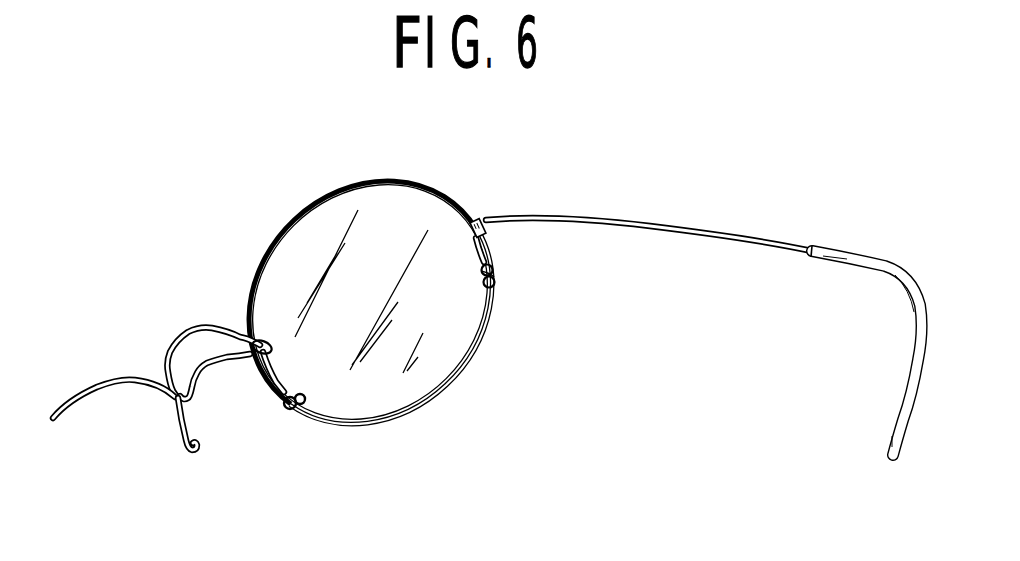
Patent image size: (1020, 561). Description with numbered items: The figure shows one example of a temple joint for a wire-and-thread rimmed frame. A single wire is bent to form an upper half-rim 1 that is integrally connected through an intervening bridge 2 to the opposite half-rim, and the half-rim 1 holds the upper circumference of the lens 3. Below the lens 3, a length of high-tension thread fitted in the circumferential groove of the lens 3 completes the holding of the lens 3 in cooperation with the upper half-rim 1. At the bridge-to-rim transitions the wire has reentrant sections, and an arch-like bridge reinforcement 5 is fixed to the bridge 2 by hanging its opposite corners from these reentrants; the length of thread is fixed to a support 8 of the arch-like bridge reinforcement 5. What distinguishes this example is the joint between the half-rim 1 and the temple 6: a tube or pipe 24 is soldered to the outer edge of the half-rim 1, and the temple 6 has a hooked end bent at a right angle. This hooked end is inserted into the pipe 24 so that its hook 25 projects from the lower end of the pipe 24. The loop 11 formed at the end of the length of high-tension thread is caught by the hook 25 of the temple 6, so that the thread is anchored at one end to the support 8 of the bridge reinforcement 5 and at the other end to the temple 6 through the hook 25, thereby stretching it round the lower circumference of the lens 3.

The upper half-rim 1 is at (312, 203).
The bridge 2 is at (195, 325).
The lens 3 is at (378, 372).
The arch-like bridge reinforcement 5 is at (210, 363).
The temple 6 is at (657, 227).
The support 8 is at (182, 427).
The loop 11 is at (478, 279).
The tube or pipe 24 is at (490, 231).
The hook 25 is at (495, 264).